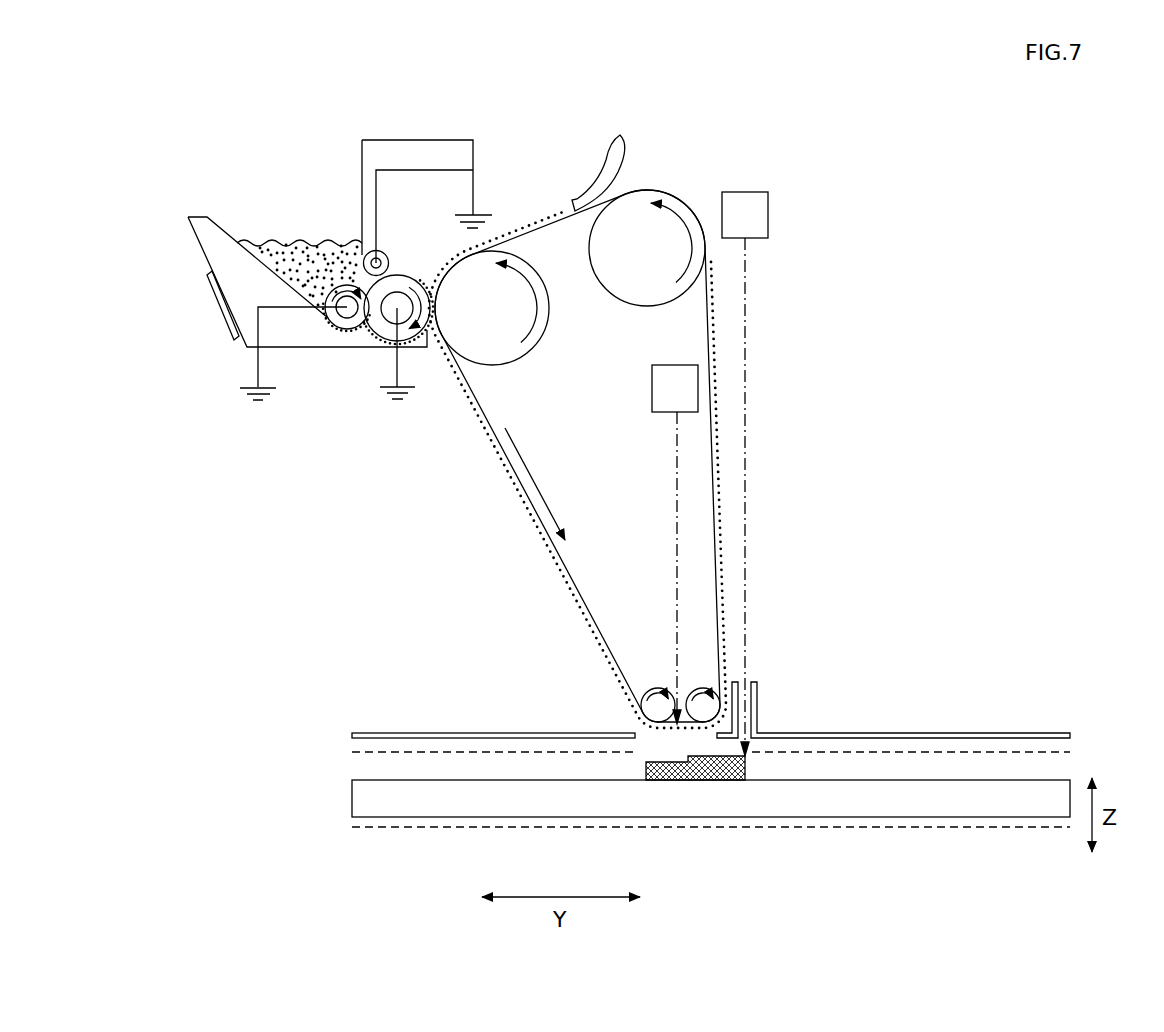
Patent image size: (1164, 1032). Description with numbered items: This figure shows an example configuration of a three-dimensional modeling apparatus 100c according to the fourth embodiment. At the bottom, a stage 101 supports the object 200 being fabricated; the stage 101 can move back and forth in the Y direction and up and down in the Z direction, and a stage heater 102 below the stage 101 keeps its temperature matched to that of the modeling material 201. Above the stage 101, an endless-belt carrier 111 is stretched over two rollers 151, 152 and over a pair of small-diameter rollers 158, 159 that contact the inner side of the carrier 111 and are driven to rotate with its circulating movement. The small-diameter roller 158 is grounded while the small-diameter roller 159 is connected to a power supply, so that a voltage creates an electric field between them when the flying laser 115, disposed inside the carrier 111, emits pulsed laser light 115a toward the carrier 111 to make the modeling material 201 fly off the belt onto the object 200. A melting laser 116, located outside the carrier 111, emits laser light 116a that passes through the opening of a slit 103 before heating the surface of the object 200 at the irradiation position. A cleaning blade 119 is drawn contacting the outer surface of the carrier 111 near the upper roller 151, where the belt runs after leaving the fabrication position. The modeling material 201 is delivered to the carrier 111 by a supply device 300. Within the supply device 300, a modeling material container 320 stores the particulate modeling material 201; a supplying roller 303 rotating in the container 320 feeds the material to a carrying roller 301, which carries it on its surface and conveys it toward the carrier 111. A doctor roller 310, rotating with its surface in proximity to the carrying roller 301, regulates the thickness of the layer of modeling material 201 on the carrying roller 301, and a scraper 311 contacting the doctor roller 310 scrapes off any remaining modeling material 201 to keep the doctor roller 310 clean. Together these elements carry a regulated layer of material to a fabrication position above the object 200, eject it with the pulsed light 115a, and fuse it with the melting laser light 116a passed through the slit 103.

The three-dimensional modeling apparatus 100c is at (294, 82).
The supply device 300 is at (256, 150).
The modeling material container 320 is at (267, 268).
The modeling material 201 is at (282, 257).
The scraper 311 is at (360, 247).
The doctor roller 310 is at (378, 262).
The supplying roller 303 is at (345, 312).
The carrying roller 301 is at (388, 312).
The carrier 111 is at (490, 471).
The roller 152 is at (500, 360).
The roller 151 is at (643, 306).
The cleaning blade 119 is at (610, 175).
The melting laser 116 is at (745, 198).
The laser light 116a is at (746, 503).
The flying laser 115 is at (652, 385).
The pulsed laser light 115a is at (676, 570).
The small-diameter roller 158 is at (641, 712).
The small-diameter roller 159 is at (689, 696).
The slit 103 is at (753, 681).
The object 200 is at (708, 772).
The stage 101 is at (848, 807).
The stage heater 102 is at (998, 828).